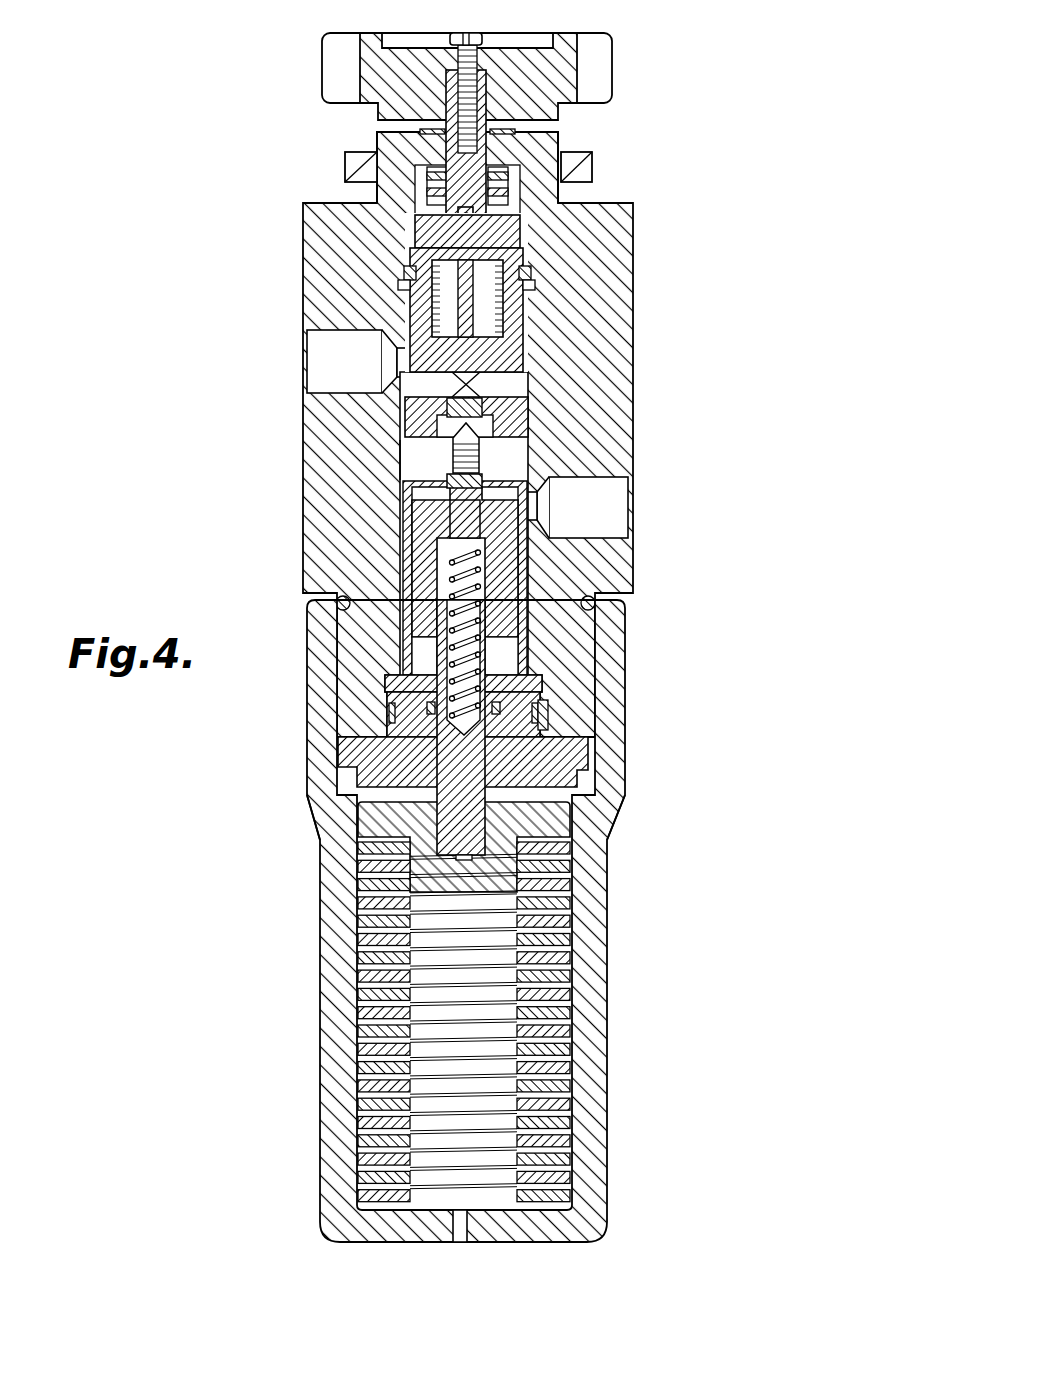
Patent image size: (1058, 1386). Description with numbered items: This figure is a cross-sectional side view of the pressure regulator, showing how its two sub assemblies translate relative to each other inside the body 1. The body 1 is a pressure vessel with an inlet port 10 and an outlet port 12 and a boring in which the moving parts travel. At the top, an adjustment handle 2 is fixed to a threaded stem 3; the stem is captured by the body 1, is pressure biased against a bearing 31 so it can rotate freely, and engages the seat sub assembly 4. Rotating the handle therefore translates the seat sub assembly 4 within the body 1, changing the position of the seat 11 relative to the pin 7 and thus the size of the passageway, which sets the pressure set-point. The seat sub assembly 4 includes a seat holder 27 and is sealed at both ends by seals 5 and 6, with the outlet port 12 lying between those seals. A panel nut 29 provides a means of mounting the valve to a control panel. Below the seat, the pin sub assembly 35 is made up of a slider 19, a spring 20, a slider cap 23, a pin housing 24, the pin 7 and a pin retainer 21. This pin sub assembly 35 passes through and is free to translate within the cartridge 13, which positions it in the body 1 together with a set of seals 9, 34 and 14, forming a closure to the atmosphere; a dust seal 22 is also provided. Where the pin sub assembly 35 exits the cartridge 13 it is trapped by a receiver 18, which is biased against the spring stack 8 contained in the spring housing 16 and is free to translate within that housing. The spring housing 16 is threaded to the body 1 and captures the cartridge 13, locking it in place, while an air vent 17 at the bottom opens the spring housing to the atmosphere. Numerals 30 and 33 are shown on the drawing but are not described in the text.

The body 1 is at (345, 250).
The adjustment handle 2 is at (613, 50).
The threaded stem 3 is at (523, 237).
The seat sub assembly 4 is at (528, 320).
The seal 5 is at (525, 273).
The seal 6 is at (418, 402).
The piston/pin 7 is at (522, 482).
The spring 8 is at (567, 963).
The seal 9 is at (547, 713).
The inlet port 10 is at (613, 528).
The seat 11 is at (528, 390).
The outlet port 12 is at (322, 367).
The cartridge 13 is at (597, 810).
The seal 14 is at (600, 833).
The spring housing 16 is at (590, 1055).
The air vent 17 is at (460, 1243).
The receiver 18 is at (373, 813).
The slider 19 is at (450, 753).
The spring 20 is at (395, 640).
The pin retainer 21 is at (450, 515).
The dust seal 22 is at (340, 593).
The slider cap 23 is at (455, 548).
The pin housing 24 is at (447, 478).
The seat holder 27 is at (410, 333).
The panel nut 29 is at (357, 167).
The threaded nut 30 is at (510, 177).
The bearing 31 is at (503, 217).
The needle 33 is at (478, 445).
The seal 34 is at (497, 770).
The pin sub assembly 35 is at (437, 452).